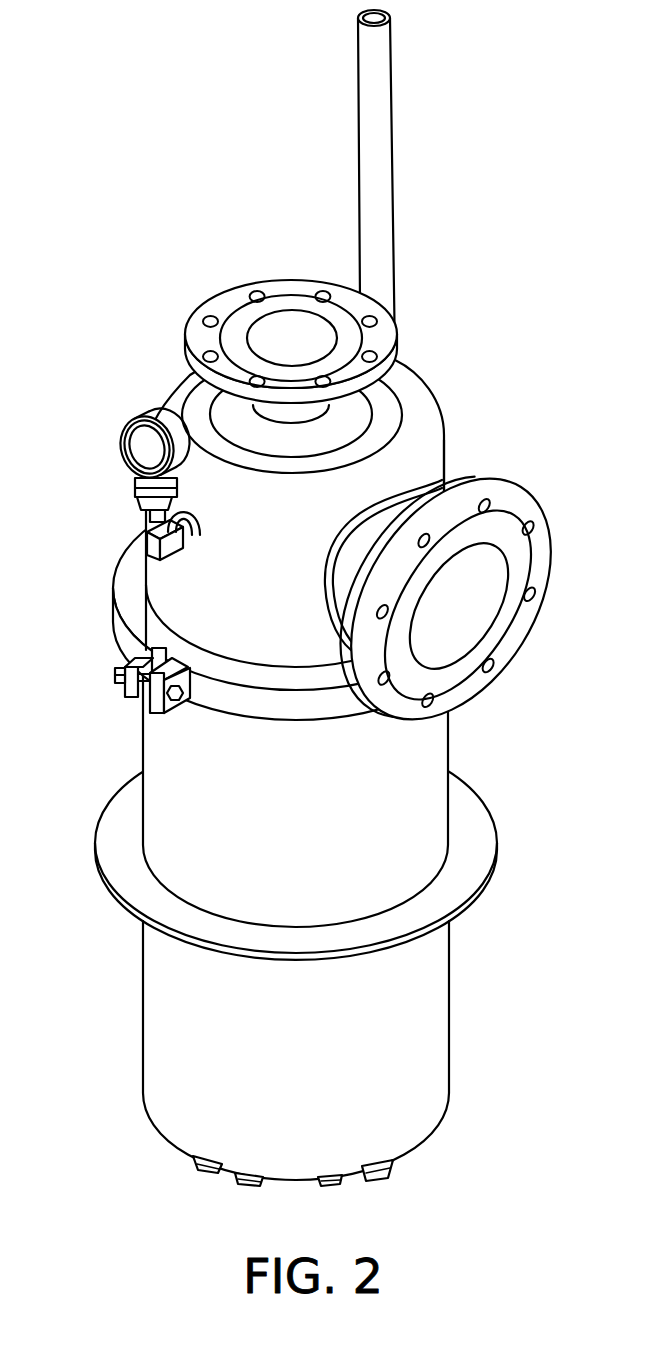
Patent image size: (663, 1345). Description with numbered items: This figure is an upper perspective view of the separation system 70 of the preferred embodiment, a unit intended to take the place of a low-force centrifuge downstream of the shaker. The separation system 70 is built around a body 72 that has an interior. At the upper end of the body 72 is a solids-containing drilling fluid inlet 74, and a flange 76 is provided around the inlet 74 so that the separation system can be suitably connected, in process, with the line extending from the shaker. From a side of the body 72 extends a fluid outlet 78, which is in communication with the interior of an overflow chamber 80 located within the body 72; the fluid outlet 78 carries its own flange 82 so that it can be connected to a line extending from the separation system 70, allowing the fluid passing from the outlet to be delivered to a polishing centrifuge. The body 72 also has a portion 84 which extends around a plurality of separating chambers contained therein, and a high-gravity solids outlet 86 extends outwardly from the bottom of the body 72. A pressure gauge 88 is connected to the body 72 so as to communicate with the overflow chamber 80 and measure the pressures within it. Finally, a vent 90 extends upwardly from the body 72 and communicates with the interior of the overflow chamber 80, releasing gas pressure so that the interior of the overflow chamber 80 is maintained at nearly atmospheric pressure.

The separation system 70 is at (447, 336).
The body 72 is at (445, 742).
The solids-containing drilling fluid inlet 74 is at (293, 322).
The flange 76 is at (197, 315).
The fluid outlet 78 is at (492, 608).
The overflow chamber 80 is at (445, 467).
The flange 82 is at (528, 494).
The portion 84 is at (449, 1012).
The high-gravity solids outlet 86 is at (391, 1173).
The pressure gauge 88 is at (119, 438).
The vent 90 is at (395, 166).